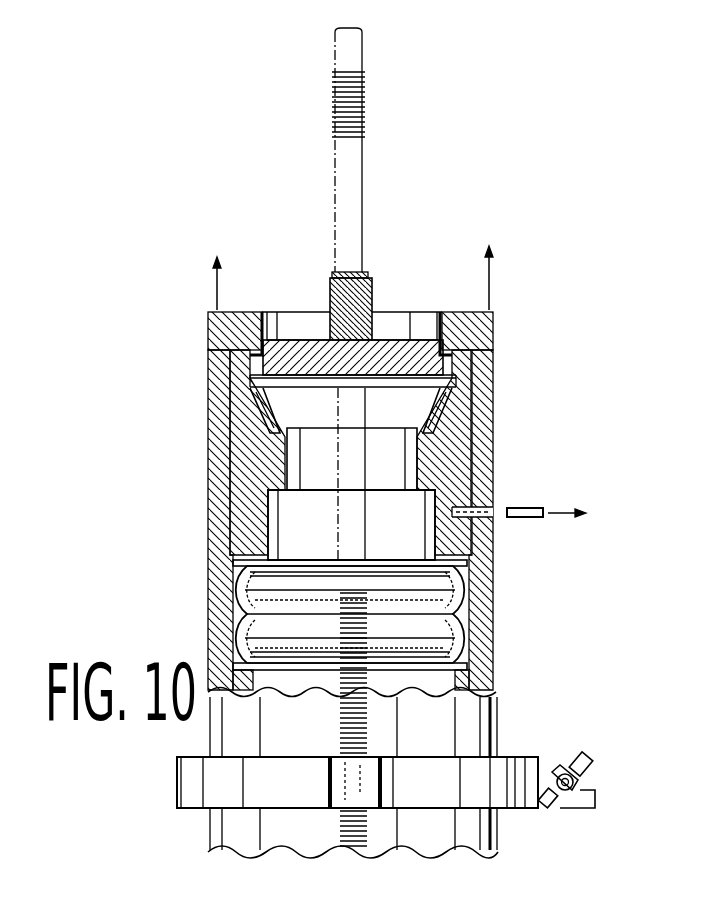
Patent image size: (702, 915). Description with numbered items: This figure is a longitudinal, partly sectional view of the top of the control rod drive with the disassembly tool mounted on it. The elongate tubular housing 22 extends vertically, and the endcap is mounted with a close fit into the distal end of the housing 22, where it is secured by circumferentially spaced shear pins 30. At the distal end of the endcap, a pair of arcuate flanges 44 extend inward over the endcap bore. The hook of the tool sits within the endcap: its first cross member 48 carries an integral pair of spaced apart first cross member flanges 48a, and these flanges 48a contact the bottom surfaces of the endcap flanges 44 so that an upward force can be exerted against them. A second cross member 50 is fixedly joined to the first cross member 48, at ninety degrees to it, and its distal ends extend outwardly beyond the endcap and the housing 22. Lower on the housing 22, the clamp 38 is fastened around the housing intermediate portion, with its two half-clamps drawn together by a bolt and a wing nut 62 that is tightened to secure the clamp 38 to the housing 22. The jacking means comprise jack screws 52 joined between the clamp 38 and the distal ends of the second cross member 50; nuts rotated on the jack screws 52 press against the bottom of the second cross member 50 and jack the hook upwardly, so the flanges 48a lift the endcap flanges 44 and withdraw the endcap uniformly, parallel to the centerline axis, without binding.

The housing 22 is at (210, 823).
The shear pins 30 is at (526, 507).
The clamp 38 is at (516, 745).
The arcuate flanges 44 is at (263, 310).
The first cross member 48 is at (320, 350).
The first cross member flanges 48a is at (258, 362).
The second cross member 50 is at (373, 300).
The jack screws 52 is at (364, 107).
The wing nut 62 is at (576, 757).